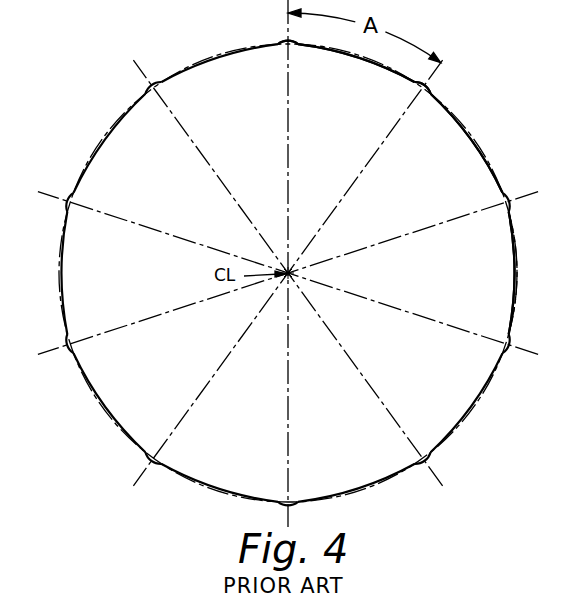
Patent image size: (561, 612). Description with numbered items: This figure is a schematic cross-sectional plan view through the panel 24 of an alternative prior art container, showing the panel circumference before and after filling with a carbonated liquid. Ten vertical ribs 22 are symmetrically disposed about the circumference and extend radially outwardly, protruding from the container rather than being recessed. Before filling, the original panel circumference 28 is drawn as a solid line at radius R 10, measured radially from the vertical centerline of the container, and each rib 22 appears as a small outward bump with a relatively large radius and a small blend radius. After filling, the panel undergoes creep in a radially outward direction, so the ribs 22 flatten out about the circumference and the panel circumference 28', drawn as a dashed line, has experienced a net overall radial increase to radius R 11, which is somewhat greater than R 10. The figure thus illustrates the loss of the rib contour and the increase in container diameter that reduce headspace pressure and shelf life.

The vertical ribs 22 is at (418, 86).
The panel 24 is at (470, 412).
The original panel circumference 28 is at (400, 118).
The panel circumference after filling 28' is at (288, 273).
The radius R10 profile 10 is at (508, 243).
The radius R11 reference circle 11 is at (514, 283).